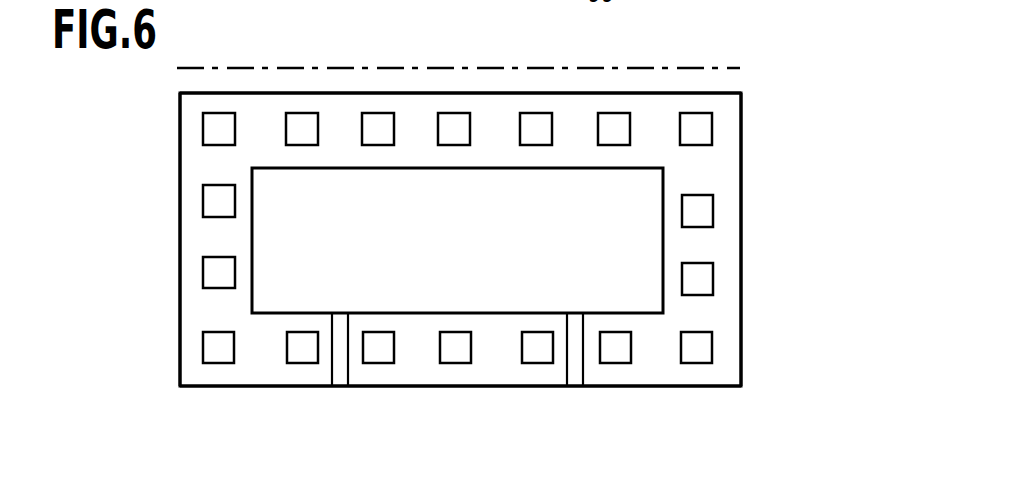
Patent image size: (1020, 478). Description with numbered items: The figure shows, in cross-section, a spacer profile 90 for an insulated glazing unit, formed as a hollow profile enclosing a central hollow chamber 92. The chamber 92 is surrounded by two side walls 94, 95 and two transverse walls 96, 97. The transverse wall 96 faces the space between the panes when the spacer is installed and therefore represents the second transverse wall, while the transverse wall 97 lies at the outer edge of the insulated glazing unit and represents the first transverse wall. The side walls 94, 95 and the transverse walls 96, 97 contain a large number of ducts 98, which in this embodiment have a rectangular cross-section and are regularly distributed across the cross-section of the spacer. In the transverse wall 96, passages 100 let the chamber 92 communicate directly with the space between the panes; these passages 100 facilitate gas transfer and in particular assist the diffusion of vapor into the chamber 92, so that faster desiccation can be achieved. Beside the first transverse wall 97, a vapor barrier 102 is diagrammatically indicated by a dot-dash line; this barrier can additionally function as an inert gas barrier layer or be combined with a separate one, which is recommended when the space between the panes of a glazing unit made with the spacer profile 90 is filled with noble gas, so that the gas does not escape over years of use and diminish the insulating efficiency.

The spacer profile 90 is at (760, 100).
The hollow chamber 92 is at (455, 260).
The side wall 94 is at (176, 222).
The side wall 95 is at (748, 165).
The transverse wall 96 is at (431, 393).
The transverse wall 97 is at (660, 92).
The ducts 98 is at (683, 277).
The passages 100 is at (348, 366).
The vapor barrier 102 is at (378, 68).